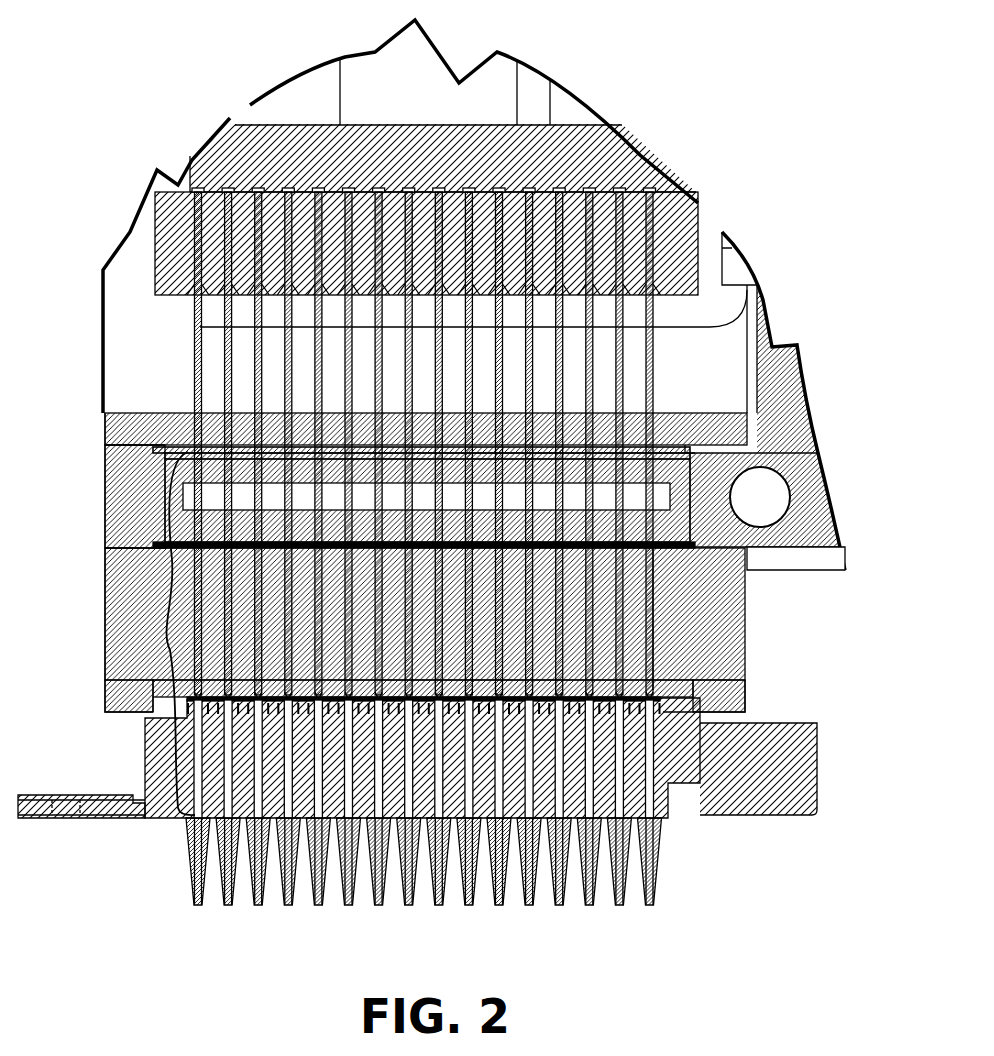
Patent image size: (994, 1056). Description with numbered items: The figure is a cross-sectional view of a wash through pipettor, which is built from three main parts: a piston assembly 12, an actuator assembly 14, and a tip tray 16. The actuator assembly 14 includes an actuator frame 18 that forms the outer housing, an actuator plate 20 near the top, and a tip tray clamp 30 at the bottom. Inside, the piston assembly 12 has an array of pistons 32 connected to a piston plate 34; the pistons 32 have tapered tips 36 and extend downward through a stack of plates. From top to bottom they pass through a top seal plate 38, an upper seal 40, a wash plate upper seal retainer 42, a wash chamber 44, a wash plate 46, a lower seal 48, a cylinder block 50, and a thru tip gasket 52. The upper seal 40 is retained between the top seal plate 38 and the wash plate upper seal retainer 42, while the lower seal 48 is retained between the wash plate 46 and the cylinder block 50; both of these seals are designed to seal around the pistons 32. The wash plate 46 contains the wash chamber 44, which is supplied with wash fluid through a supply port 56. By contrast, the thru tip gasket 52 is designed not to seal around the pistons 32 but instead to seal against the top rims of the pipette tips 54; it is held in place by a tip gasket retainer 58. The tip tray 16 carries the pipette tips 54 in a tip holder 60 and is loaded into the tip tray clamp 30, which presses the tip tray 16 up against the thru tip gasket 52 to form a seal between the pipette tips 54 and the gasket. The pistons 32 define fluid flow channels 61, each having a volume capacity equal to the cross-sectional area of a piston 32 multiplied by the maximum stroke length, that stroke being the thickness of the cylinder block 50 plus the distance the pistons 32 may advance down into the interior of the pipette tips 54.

The piston assembly 12 is at (82, 412).
The actuator assembly 14 is at (82, 46).
The tip tray 16 is at (82, 717).
The actuator frame 18 is at (708, 352).
The actuator plate 20 is at (630, 157).
The tip tray clamp 30 is at (770, 770).
The pistons 32 is at (655, 612).
The piston plate 34 is at (668, 228).
The tapered tips 36 is at (690, 686).
The top seal plate 38 is at (733, 420).
The upper seal 40 is at (690, 447).
The wash plate upper seal retainer 42 is at (670, 470).
The wash chamber 44 is at (633, 460).
The wash plate 46 is at (807, 488).
The lower seal 48 is at (690, 548).
The cylinder block 50 is at (710, 636).
The thru tip gasket 52 is at (700, 690).
The pipette tips 54 is at (650, 842).
The supply port 56 is at (763, 507).
The tip gasket retainer 58 is at (723, 706).
The tip holder 60 is at (683, 742).
The fluid flow channels 61 is at (170, 645).